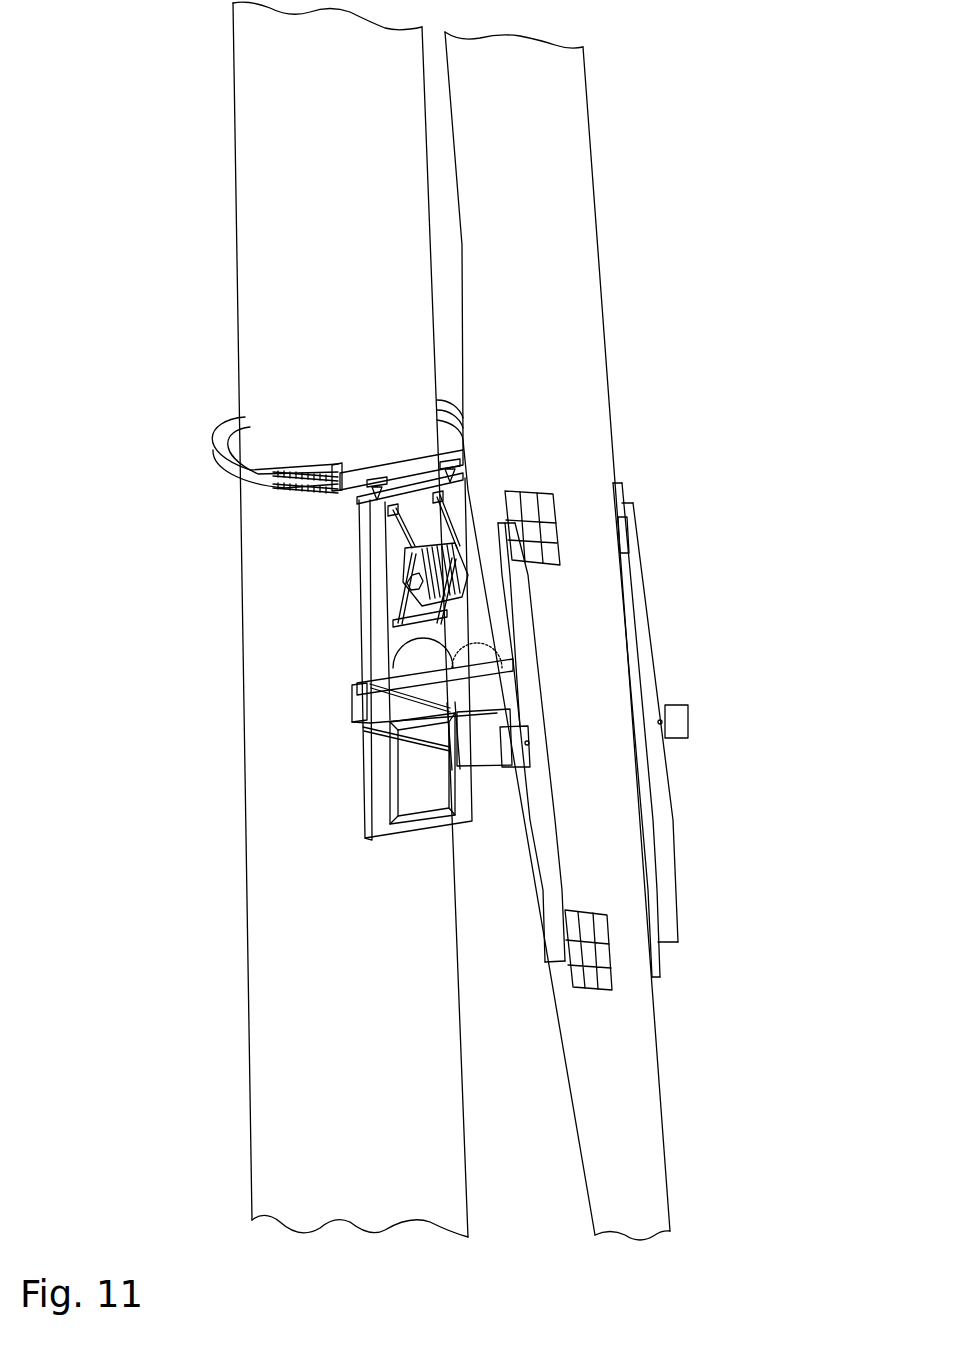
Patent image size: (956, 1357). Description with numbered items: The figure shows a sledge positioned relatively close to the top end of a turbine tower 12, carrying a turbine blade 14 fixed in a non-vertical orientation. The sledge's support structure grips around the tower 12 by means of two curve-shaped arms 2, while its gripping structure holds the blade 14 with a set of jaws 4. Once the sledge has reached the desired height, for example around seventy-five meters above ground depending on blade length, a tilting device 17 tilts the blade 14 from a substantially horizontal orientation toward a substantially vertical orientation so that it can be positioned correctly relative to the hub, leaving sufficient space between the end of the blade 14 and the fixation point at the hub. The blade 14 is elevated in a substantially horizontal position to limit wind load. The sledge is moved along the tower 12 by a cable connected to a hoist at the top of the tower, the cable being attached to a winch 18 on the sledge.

The curve-shaped arms 2 is at (443, 423).
The set of jaws 4 is at (533, 702).
The turbine tower 12 is at (277, 225).
The blade 14 is at (563, 228).
The tilting device 17 is at (418, 655).
The winch 18 is at (412, 565).